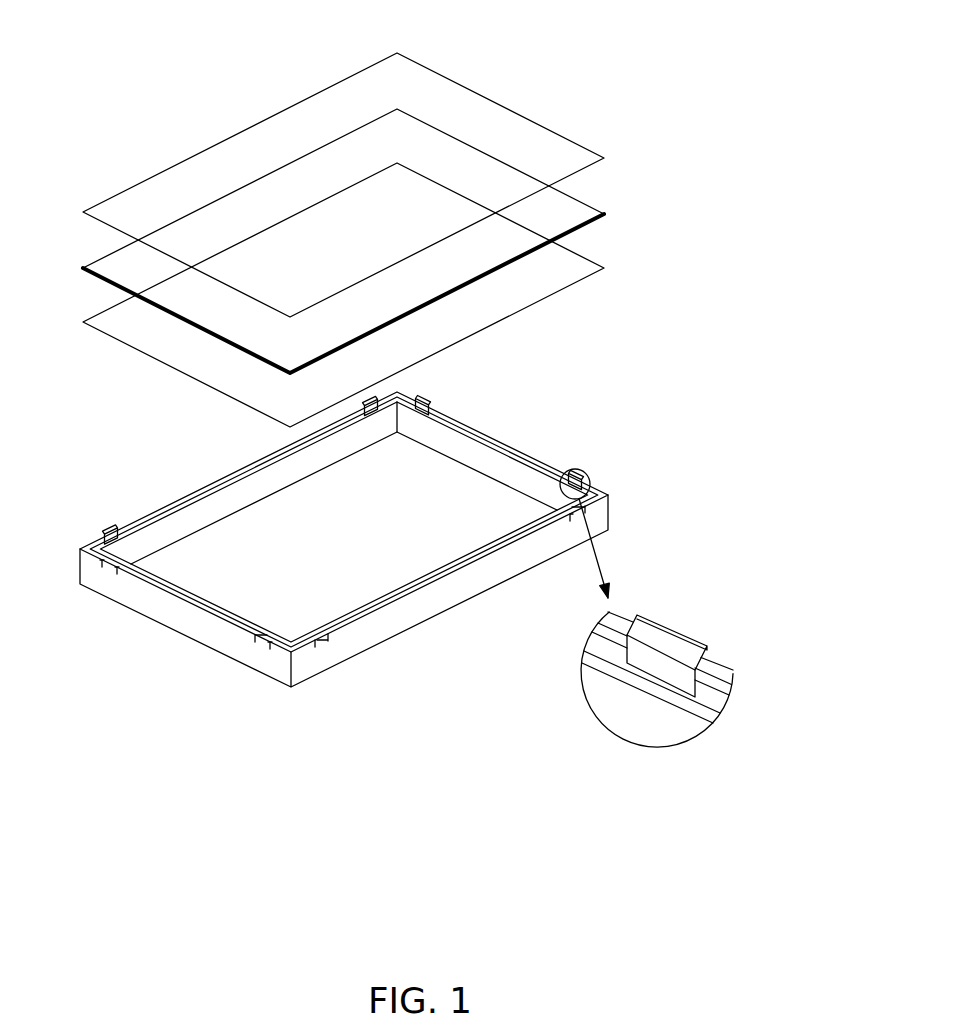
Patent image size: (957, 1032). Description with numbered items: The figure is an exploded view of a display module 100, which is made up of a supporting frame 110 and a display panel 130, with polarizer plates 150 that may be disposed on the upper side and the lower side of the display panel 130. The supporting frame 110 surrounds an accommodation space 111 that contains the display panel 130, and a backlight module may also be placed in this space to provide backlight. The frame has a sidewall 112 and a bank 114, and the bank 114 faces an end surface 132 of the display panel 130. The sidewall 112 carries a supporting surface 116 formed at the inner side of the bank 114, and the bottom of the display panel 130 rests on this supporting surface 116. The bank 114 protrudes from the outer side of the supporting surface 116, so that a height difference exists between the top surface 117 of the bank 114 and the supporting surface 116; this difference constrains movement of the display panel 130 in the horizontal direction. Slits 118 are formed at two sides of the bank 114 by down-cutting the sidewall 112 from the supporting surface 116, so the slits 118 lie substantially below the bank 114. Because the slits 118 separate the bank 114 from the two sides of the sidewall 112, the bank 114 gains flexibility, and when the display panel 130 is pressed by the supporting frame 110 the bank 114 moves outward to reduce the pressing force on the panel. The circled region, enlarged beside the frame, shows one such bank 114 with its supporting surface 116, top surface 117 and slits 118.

The display module 100 is at (197, 33).
The supporting frame 110 is at (421, 571).
The accommodation space 111 is at (303, 537).
The sidewall 112 is at (400, 614).
The bank 114 is at (448, 574).
The supporting surface 116 is at (658, 648).
The top surface 117 is at (698, 643).
The slits 118 is at (312, 640).
The display panel 130 is at (349, 241).
The end surface 132 is at (595, 222).
The polarizer plates 150 is at (128, 203).